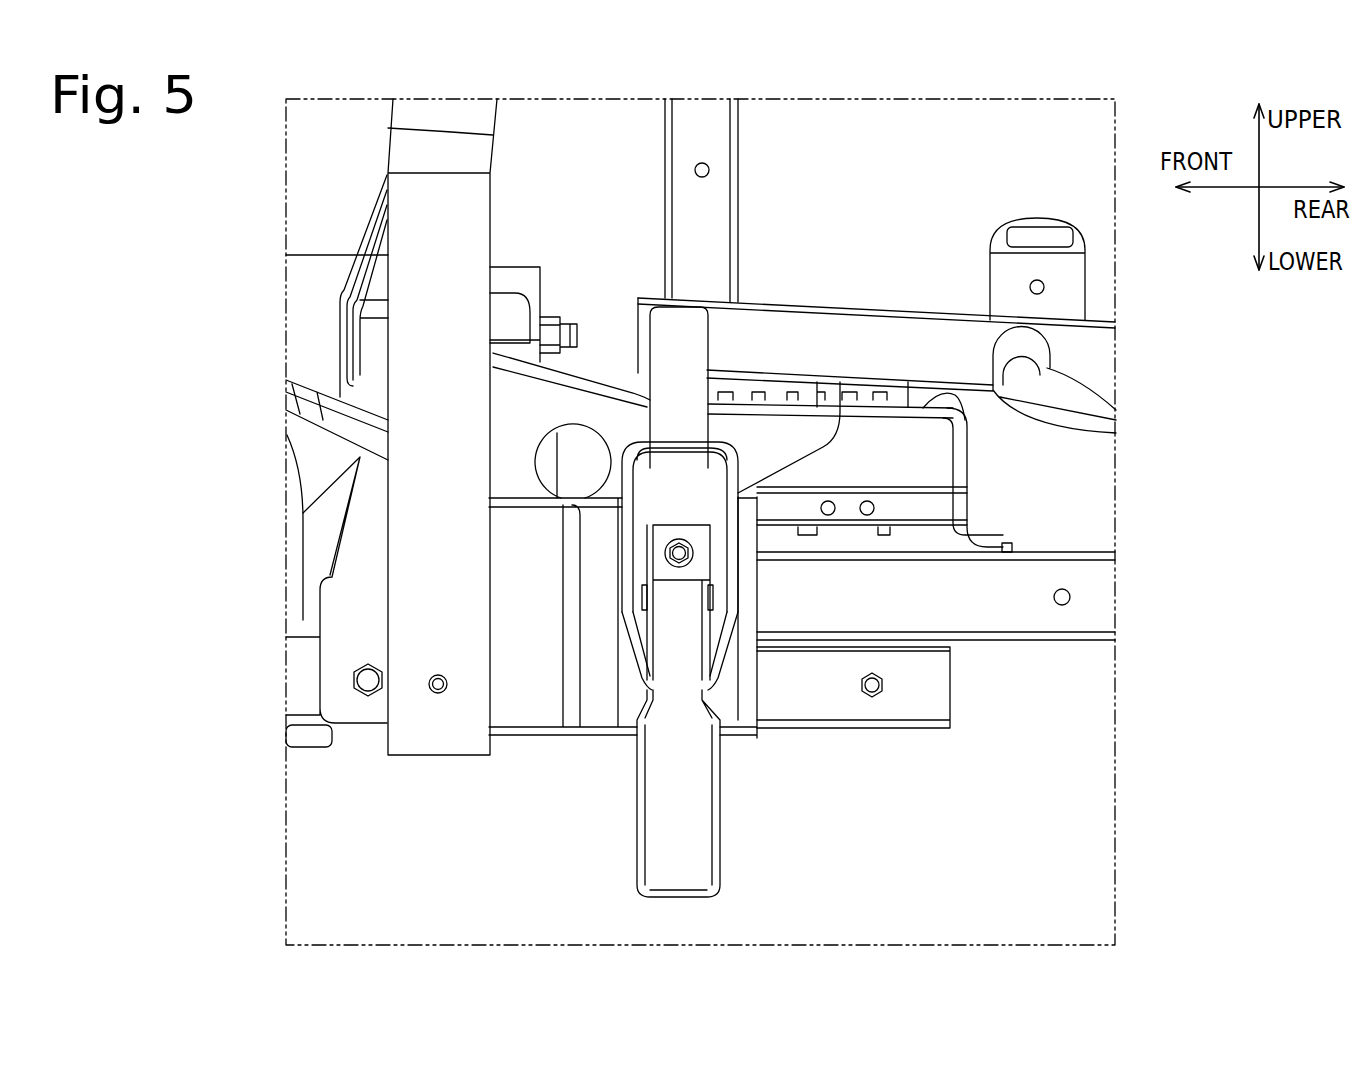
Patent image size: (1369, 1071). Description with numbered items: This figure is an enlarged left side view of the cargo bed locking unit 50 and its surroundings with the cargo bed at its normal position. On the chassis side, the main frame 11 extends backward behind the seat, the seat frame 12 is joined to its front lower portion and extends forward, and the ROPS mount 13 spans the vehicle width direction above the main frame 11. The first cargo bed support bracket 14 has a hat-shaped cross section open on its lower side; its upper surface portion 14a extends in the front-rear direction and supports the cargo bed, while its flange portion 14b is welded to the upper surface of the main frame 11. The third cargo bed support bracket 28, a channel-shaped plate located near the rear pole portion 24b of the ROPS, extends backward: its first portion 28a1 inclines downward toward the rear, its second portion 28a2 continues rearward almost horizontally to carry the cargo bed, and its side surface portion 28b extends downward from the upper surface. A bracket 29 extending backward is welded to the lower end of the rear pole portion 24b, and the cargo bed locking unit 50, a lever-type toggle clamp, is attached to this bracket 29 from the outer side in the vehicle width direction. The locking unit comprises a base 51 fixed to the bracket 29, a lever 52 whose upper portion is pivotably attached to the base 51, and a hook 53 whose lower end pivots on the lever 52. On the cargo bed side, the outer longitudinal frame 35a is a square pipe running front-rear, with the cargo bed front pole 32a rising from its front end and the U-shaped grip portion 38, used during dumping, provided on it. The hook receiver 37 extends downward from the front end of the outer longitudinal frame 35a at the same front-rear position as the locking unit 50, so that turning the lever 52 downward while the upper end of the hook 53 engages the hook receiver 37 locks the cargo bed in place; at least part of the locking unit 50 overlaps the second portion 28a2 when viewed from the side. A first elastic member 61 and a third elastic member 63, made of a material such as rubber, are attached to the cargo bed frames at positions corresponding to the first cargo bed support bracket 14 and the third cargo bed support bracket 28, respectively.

The main frame 11 is at (992, 623).
The seat frame 12 is at (800, 708).
The ROPS mount 13 is at (333, 682).
The first cargo bed support bracket 14 is at (870, 417).
The upper surface portion 14a is at (958, 412).
The flange portion 14b is at (993, 543).
The rear pole portion 24b is at (397, 373).
The third cargo bed support bracket 28 is at (513, 440).
The first portion 28a1 is at (592, 383).
The second portion 28a2 is at (742, 403).
The side surface portion 28b is at (510, 480).
The bracket 29 is at (530, 685).
The cargo bed front pole 32a is at (690, 133).
The outer longitudinal frame 35a is at (885, 325).
The hook receiver 37 is at (680, 353).
The grip portion 38 is at (1107, 430).
The cargo bed locking unit 50 is at (620, 753).
The base 51 is at (662, 540).
The lever 52 is at (713, 845).
The hook 53 is at (637, 452).
The first elastic member 61 is at (935, 405).
The third elastic member 63 is at (785, 387).